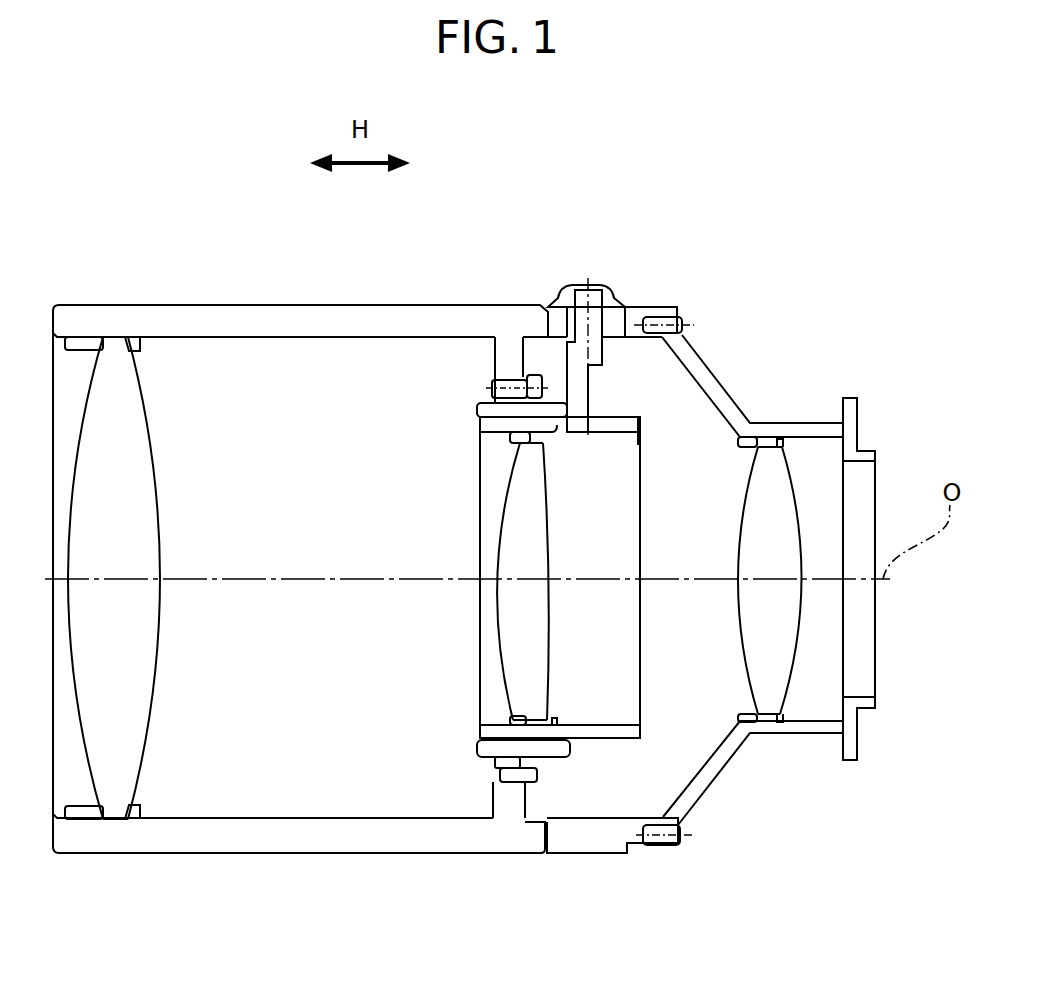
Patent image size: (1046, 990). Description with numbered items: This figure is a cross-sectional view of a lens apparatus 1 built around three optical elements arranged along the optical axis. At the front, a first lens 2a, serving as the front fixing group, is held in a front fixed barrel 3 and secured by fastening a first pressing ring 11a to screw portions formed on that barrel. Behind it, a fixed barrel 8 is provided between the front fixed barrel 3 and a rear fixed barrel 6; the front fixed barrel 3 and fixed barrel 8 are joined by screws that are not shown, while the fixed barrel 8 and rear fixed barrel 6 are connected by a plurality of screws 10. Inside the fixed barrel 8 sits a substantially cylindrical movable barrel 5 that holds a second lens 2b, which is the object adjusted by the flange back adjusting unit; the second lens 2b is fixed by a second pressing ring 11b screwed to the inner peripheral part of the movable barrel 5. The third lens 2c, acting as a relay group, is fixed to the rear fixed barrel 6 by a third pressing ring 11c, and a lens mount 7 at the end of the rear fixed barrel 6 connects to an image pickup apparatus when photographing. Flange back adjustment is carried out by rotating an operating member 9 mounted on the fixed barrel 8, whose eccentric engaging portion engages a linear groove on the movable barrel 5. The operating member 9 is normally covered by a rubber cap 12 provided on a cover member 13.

The lens apparatus 1 is at (81, 142).
The first lens 2a is at (145, 670).
The second lens 2b is at (500, 630).
The third lens 2c is at (800, 733).
The front fixed barrel 3 is at (150, 833).
The movable barrel 5 is at (543, 732).
The rear fixed barrel 6 is at (703, 780).
The lens mount 7 is at (853, 743).
The fixed barrel 8 is at (653, 310).
The operating member 9 is at (605, 308).
The screws 10 is at (680, 323).
The first pressing ring 11a is at (83, 815).
The second pressing ring 11b is at (520, 722).
The third pressing ring 11c is at (785, 670).
The rubber cap 12 is at (600, 290).
The cover member 13 is at (557, 290).